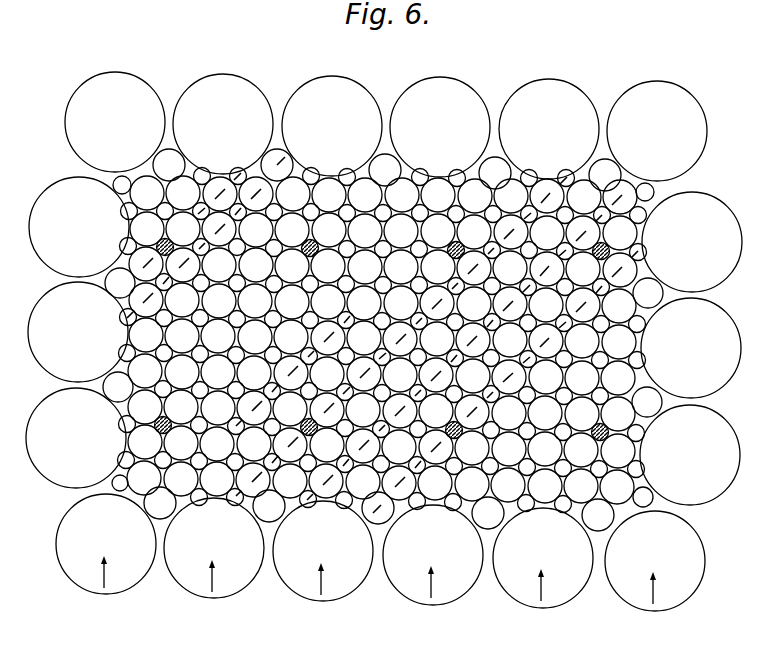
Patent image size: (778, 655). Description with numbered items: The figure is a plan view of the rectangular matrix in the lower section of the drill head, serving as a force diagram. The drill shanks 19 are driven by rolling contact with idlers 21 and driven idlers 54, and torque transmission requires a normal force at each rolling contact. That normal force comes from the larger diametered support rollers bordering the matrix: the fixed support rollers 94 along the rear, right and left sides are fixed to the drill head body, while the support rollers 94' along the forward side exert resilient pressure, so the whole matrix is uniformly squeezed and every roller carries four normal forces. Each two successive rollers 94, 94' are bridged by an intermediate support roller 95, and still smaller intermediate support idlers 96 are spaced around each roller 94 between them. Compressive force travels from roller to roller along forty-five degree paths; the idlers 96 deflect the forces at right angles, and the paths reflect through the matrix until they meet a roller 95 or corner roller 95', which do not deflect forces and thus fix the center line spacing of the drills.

The drill shank 19 is at (382, 340).
The idler 21 is at (596, 402).
The driven idler 54 is at (605, 439).
The fixed support roller 94 is at (384, 288).
The resilient support roller 94' is at (380, 552).
The intermediate support roller 95 is at (374, 323).
The corner intermediate support roller 95' is at (384, 324).
The intermediate support idler 96 is at (202, 503).